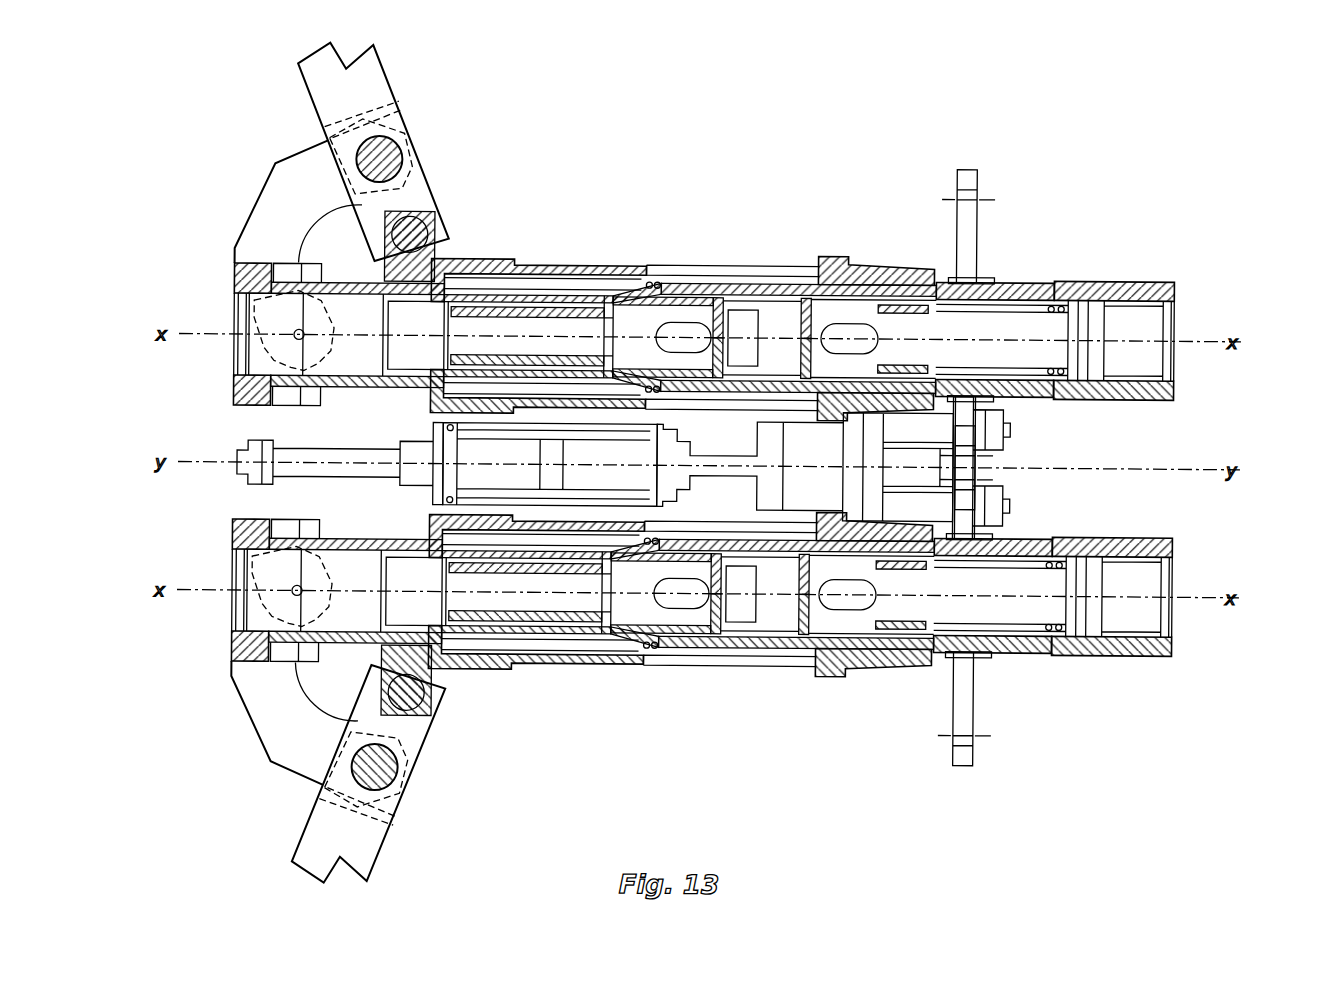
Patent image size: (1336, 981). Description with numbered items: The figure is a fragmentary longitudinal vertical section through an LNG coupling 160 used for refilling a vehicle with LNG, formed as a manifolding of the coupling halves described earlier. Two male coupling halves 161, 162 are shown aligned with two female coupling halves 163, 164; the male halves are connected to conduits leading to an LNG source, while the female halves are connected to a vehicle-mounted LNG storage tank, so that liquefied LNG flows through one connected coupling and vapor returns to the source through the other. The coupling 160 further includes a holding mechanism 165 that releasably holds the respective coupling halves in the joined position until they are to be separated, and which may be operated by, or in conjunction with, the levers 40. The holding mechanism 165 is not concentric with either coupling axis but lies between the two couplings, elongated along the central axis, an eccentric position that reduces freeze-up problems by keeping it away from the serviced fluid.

The levers 40 is at (427, 170).
The LNG coupling 160 is at (1050, 219).
The male coupling half 161 is at (219, 328).
The male coupling half 162 is at (219, 602).
The female coupling half 163 is at (1192, 321).
The female coupling half 164 is at (1192, 594).
The holding mechanism 165 is at (993, 475).